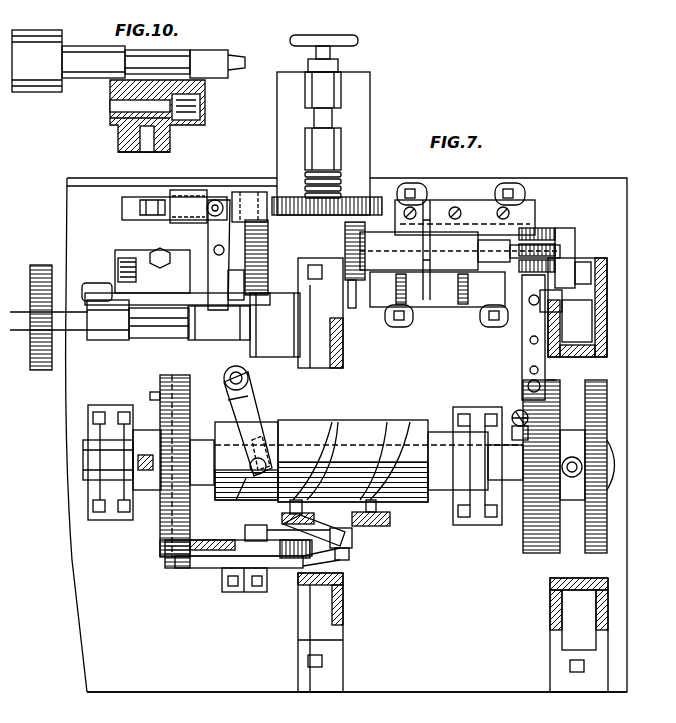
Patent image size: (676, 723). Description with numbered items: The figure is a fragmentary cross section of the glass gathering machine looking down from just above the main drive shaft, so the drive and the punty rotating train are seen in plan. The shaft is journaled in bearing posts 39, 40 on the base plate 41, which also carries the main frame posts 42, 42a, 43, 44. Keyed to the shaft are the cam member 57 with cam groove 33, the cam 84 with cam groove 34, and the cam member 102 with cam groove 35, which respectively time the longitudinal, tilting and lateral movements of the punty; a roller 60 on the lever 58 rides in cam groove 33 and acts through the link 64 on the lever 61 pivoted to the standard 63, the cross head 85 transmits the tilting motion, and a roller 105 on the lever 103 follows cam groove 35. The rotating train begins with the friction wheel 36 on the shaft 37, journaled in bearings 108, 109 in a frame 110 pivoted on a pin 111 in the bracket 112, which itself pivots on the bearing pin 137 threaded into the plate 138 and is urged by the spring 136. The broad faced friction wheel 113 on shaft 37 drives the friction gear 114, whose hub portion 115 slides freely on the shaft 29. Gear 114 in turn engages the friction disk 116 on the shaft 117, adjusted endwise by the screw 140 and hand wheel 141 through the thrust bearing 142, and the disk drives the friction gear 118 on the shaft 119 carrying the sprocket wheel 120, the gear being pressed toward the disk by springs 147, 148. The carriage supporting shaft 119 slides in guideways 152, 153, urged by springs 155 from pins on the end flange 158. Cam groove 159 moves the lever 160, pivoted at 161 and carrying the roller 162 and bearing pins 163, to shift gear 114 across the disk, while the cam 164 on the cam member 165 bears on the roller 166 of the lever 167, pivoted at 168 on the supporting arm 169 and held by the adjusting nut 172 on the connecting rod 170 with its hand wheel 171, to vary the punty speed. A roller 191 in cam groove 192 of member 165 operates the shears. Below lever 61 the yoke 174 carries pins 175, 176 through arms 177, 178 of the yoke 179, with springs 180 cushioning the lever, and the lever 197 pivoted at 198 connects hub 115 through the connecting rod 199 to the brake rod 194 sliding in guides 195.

In FIG. 7, the shaft 29 is at (98, 284).
In FIG. 7, the cam groove 33 is at (330, 435).
In FIG. 7, the cam groove 34 is at (160, 530).
In FIG. 7, the cam groove 35 is at (395, 430).
In FIG. 7, the friction wheel 36 is at (36, 370).
In FIG. 10, the shaft 37 is at (170, 60).
In FIG. 7, the shaft 37 is at (175, 330).
In FIG. 7, the bearing post 39 is at (88, 496).
In FIG. 7, the bearing post 40 is at (478, 525).
In FIG. 7, the base plate 41 is at (200, 680).
In FIG. 7, the supporting post 42 is at (600, 312).
In FIG. 7, the supporting post 42a is at (608, 608).
In FIG. 7, the supporting post 43 is at (343, 352).
In FIG. 7, the supporting post 44 is at (343, 606).
In FIG. 7, the cam member 57 is at (302, 430).
In FIG. 7, the lever 58 is at (352, 534).
In FIG. 7, the roller 60 is at (282, 516).
In FIG. 7, the lever 61 is at (245, 540).
In FIG. 7, the standard 63 is at (244, 592).
In FIG. 7, the link 64 is at (350, 552).
In FIG. 7, the cam 84 is at (160, 392).
In FIG. 7, the cross head 85 is at (128, 500).
In FIG. 7, the cam member 102 is at (412, 428).
In FIG. 7, the lever 103 is at (390, 524).
In FIG. 7, the roller 105 is at (392, 512).
In FIG. 10, the bearing 108 is at (110, 76).
In FIG. 7, the bearing 108 is at (105, 340).
In FIG. 10, the bearing 109 is at (218, 62).
In FIG. 7, the bearing 109 is at (208, 340).
In FIG. 10, the frame 110 is at (112, 106).
In FIG. 7, the frame 110 is at (140, 320).
In FIG. 10, the pin 111 is at (200, 97).
In FIG. 7, the pin 111 is at (160, 290).
In FIG. 10, the supporting bracket 112 is at (112, 123).
In FIG. 7, the supporting bracket 112 is at (120, 250).
In FIG. 7, the friction wheel 113 is at (275, 325).
In FIG. 7, the friction gear 114 is at (268, 240).
In FIG. 7, the hub portion 115 is at (236, 280).
In FIG. 7, the friction disk 116 is at (358, 197).
In FIG. 7, the shaft 117 is at (335, 120).
In FIG. 7, the friction gear 118 is at (348, 240).
In FIG. 7, the shaft 119 is at (520, 240).
In FIG. 7, the sprocket wheel 120 is at (430, 205).
In FIG. 7, the spring 136 is at (126, 262).
In FIG. 10, the bearing pin 137 is at (118, 135).
In FIG. 10, the plate 138 is at (172, 134).
In FIG. 7, the screw 140 is at (331, 53).
In FIG. 7, the hand wheel 141 is at (355, 38).
In FIG. 7, the thrust bearing 142 is at (342, 175).
In FIG. 7, the spring 147 is at (402, 300).
In FIG. 7, the spring 148 is at (462, 302).
In FIG. 7, the guideway 152 is at (512, 210).
In FIG. 7, the guideway 153 is at (488, 320).
In FIG. 7, the spring 155 is at (565, 248).
In FIG. 7, the end flange 158 is at (590, 268).
In FIG. 7, the cam groove 159 is at (240, 498).
In FIG. 7, the lever 160 is at (255, 400).
In FIG. 7, the pivot 161 is at (228, 388).
In FIG. 7, the roller 162 is at (265, 422).
In FIG. 7, the bearing pin 163 is at (226, 372).
In FIG. 7, the cam 164 is at (523, 535).
In FIG. 7, the cam member 165 is at (548, 552).
In FIG. 7, the roller 166 is at (512, 418).
In FIG. 7, the lever 167 is at (522, 348).
In FIG. 7, the pivot 168 is at (528, 372).
In FIG. 7, the supporting arm 169 is at (546, 370).
In FIG. 7, the connecting rod 170 is at (396, 316).
In FIG. 7, the hand wheel 171 is at (350, 300).
In FIG. 7, the adjusting nut 172 is at (556, 298).
In FIG. 7, the yoke 174 is at (218, 570).
In FIG. 7, the pin 175 is at (320, 558).
In FIG. 7, the pin 176 is at (165, 556).
In FIG. 7, the arm 177 is at (330, 568).
In FIG. 7, the arm 178 is at (172, 564).
In FIG. 7, the yoke 179 is at (182, 558).
In FIG. 7, the spring 180 is at (292, 560).
In FIG. 7, the roller 191 is at (582, 467).
In FIG. 7, the cam groove 192 is at (572, 424).
In FIG. 7, the rod 194 is at (132, 204).
In FIG. 7, the guide 195 is at (178, 190).
In FIG. 7, the lever 197 is at (213, 200).
In FIG. 7, the pivot 198 is at (250, 192).
In FIG. 7, the connecting rod 199 is at (160, 198).